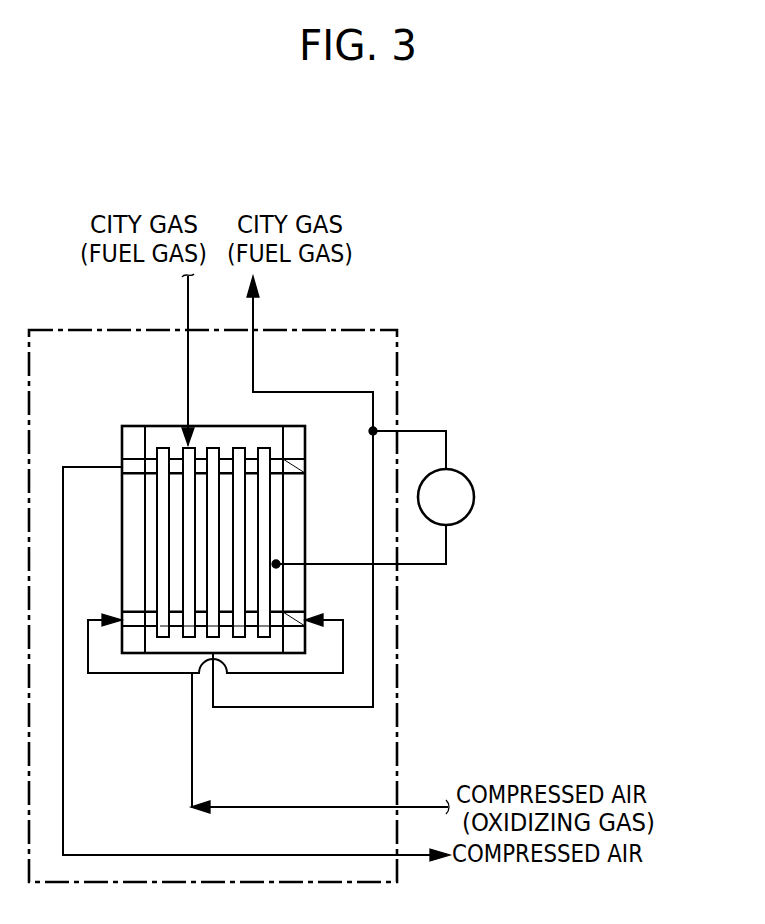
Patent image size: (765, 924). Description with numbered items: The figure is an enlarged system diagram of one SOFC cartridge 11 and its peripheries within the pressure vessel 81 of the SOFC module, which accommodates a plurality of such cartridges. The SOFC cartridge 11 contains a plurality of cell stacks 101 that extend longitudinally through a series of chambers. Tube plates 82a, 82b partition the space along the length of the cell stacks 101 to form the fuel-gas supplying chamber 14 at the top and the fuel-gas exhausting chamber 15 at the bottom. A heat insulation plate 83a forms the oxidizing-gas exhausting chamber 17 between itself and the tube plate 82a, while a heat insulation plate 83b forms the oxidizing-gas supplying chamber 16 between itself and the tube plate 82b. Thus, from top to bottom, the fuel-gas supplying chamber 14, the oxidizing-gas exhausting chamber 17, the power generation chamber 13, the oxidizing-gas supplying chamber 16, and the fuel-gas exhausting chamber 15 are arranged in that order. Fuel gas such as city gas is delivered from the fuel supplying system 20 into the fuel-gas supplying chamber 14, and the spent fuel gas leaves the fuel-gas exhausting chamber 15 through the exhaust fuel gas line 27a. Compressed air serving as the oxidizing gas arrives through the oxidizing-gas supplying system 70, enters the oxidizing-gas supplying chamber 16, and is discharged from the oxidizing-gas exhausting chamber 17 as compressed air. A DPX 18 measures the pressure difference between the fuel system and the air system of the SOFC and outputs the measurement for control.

The SOFC cartridge 11 is at (112, 418).
The power generation chamber 13 is at (275, 534).
The fuel-gas supplying chamber 14 is at (216, 434).
The fuel-gas exhausting chamber 15 is at (172, 644).
The oxidizing-gas supplying chamber 16 is at (300, 612).
The oxidizing-gas exhausting chamber 17 is at (295, 467).
The DPX 18 is at (475, 497).
The fuel supplying system 20 is at (187, 300).
The exhaust fuel gas line 27a is at (253, 308).
The oxidizing-gas supplying system 70 is at (428, 800).
The pressure vessel 81 is at (398, 357).
The tube plate 82a is at (135, 458).
The tube plate 82b is at (135, 626).
The heat insulation plate 83a is at (130, 476).
The heat insulation plate 83b is at (135, 612).
The cell stack 101 is at (271, 501).